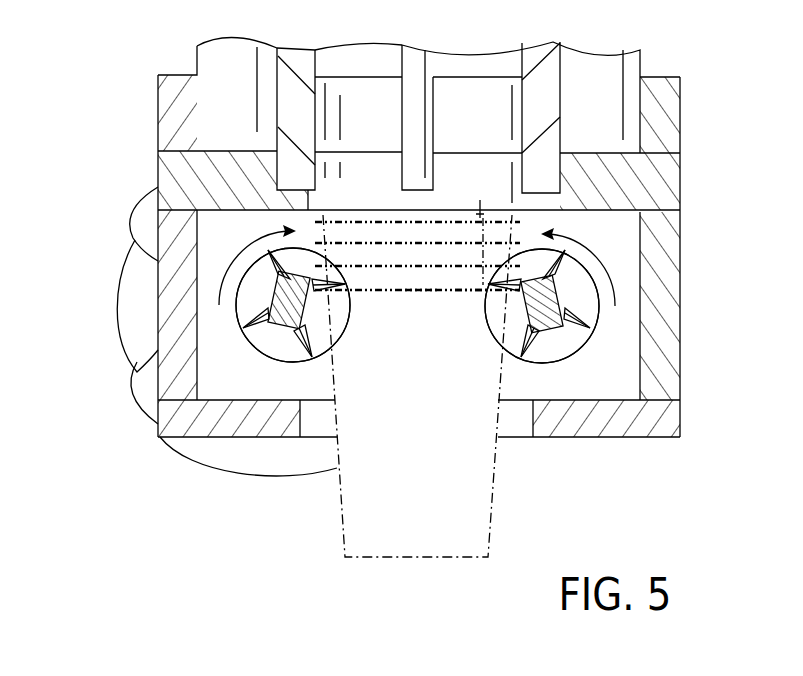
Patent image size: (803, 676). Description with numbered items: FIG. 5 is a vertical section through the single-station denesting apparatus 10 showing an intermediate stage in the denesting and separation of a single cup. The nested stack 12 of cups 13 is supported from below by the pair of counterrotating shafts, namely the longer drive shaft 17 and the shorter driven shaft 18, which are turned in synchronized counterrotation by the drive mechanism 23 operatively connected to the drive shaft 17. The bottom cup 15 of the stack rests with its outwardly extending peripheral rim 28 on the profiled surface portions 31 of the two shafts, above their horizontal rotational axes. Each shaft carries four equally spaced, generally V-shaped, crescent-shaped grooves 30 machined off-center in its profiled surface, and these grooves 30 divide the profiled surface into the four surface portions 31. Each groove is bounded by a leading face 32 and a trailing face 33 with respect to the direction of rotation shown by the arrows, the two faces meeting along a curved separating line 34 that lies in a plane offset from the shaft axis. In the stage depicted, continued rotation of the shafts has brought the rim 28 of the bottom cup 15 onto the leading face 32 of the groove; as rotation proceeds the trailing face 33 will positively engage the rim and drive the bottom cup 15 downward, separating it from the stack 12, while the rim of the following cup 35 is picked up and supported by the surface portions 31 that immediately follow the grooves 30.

The single-station denesting apparatus 10 is at (135, 130).
The nested stack 12 is at (443, 226).
The cups 13 is at (478, 230).
The bottom cup 15 is at (495, 493).
The drive shaft 17 is at (250, 345).
The driven shaft 18 is at (547, 348).
The drive mechanism 23 is at (117, 327).
The peripheral rim 28 is at (420, 293).
The grooves 30 is at (336, 347).
The profiled surface portions 31 is at (587, 290).
The leading face 32 is at (297, 248).
The trailing face 33 is at (262, 278).
The curved separating line 34 is at (258, 340).
The following cup 35 is at (467, 293).